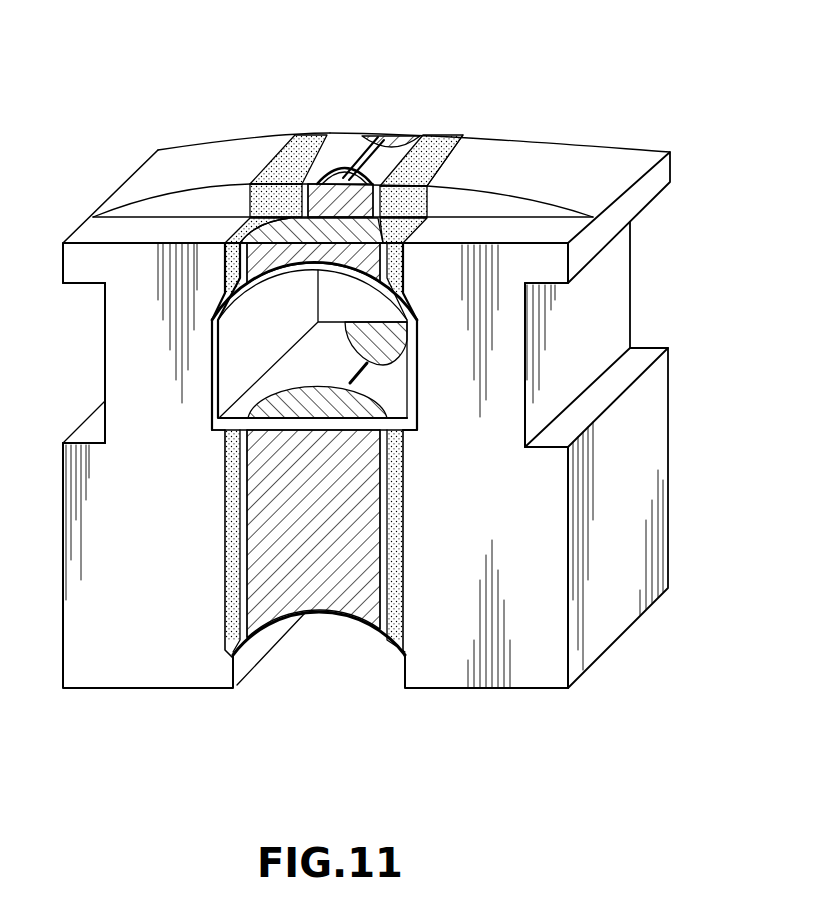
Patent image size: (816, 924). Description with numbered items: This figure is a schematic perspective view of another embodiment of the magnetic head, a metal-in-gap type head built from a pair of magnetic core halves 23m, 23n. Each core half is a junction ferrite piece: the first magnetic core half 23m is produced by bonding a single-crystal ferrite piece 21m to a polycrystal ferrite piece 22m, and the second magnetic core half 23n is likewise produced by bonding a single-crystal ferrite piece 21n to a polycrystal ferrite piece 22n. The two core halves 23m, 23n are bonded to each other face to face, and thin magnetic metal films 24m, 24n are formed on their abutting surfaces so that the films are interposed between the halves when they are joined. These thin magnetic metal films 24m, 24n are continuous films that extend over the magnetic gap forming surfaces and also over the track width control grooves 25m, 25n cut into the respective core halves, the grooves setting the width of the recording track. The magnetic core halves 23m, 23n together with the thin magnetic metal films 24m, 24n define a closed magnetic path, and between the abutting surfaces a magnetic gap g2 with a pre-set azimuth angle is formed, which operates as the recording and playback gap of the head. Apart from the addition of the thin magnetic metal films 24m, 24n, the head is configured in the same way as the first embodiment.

The single-crystal ferrite piece 21m is at (270, 175).
The single-crystal ferrite piece 21n is at (420, 163).
The polycrystal ferrite piece 22m is at (162, 175).
The polycrystal ferrite piece 22n is at (588, 182).
The magnetic core half 23m is at (212, 56).
The magnetic core half 23n is at (730, 106).
The thin magnetic metal film 24m is at (297, 197).
The thin magnetic metal film 24n is at (378, 207).
The track width control groove 25m is at (330, 173).
The track width control groove 25n is at (403, 133).
The magnetic gap g2 is at (373, 167).